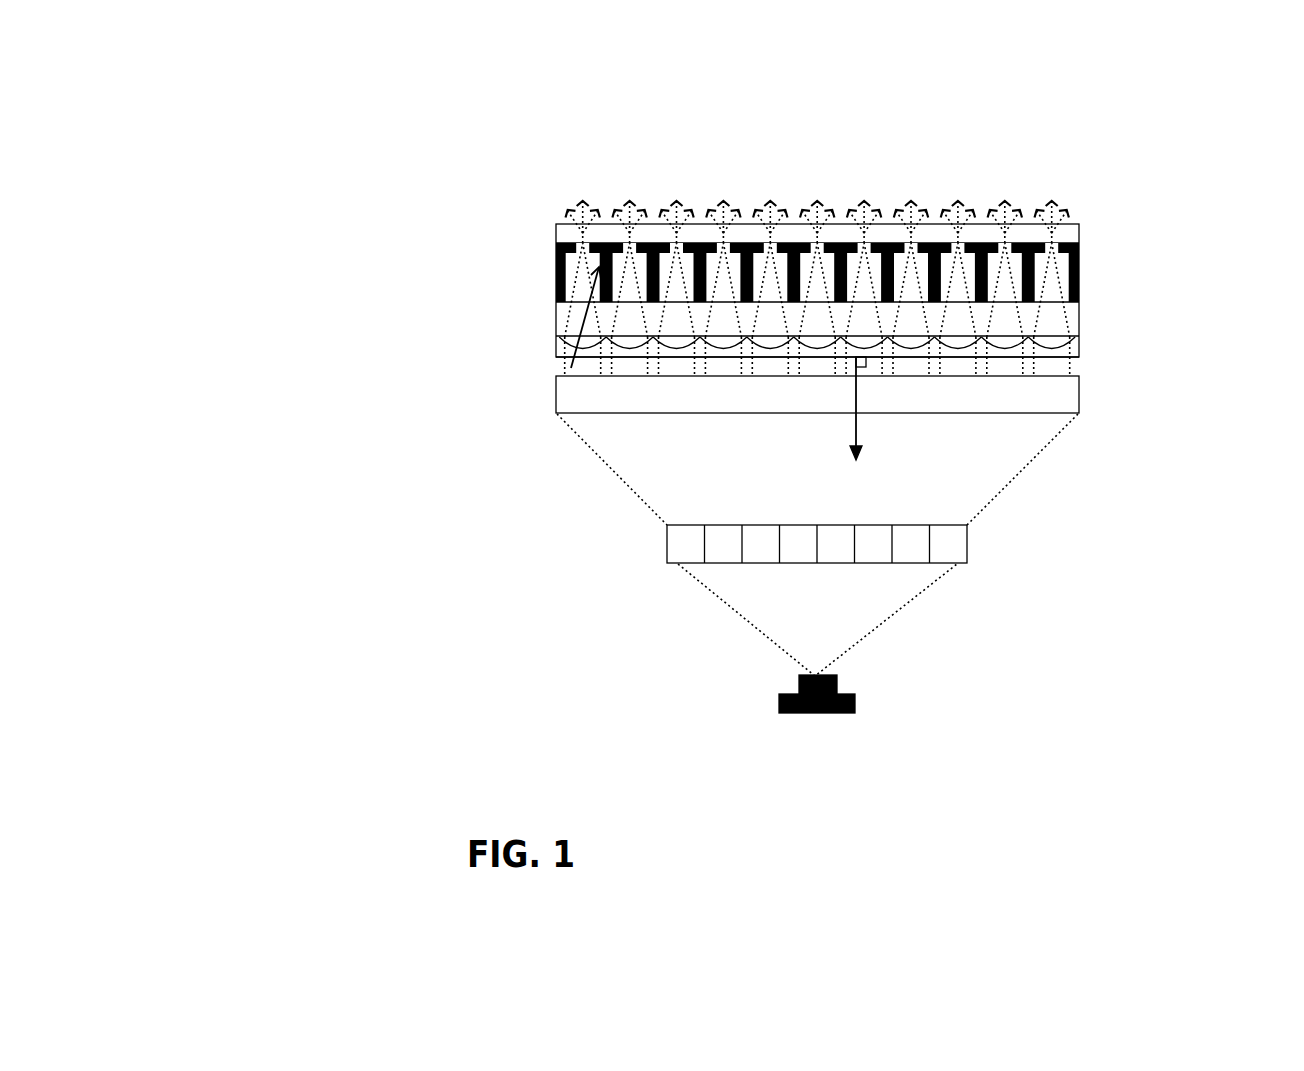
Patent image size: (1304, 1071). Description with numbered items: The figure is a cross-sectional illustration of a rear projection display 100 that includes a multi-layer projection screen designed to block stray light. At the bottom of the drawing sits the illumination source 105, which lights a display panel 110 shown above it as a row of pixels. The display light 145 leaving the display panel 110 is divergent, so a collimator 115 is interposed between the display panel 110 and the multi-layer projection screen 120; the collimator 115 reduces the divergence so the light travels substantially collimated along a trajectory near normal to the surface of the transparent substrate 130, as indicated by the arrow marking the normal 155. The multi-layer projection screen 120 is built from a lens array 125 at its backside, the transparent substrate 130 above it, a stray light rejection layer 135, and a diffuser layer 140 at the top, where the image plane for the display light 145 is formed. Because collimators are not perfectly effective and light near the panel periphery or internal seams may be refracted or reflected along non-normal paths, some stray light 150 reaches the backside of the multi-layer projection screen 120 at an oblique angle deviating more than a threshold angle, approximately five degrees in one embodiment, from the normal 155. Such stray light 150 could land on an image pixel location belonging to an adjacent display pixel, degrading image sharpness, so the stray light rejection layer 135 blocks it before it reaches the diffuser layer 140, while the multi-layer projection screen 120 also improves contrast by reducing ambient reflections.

The rear projection display 100 is at (1187, 112).
The illumination source 105 is at (843, 713).
The display panel 110 is at (968, 545).
The collimator 115 is at (1080, 398).
The multi-layer projection screen 120 is at (350, 357).
The lens array 125 is at (555, 346).
The transparent substrate 130 is at (1080, 319).
The stray light rejection layer 135 is at (538, 300).
The diffuser layer 140 is at (1080, 233).
The display light 145 is at (742, 617).
The stray light 150 is at (571, 368).
The normal 155 is at (857, 428).